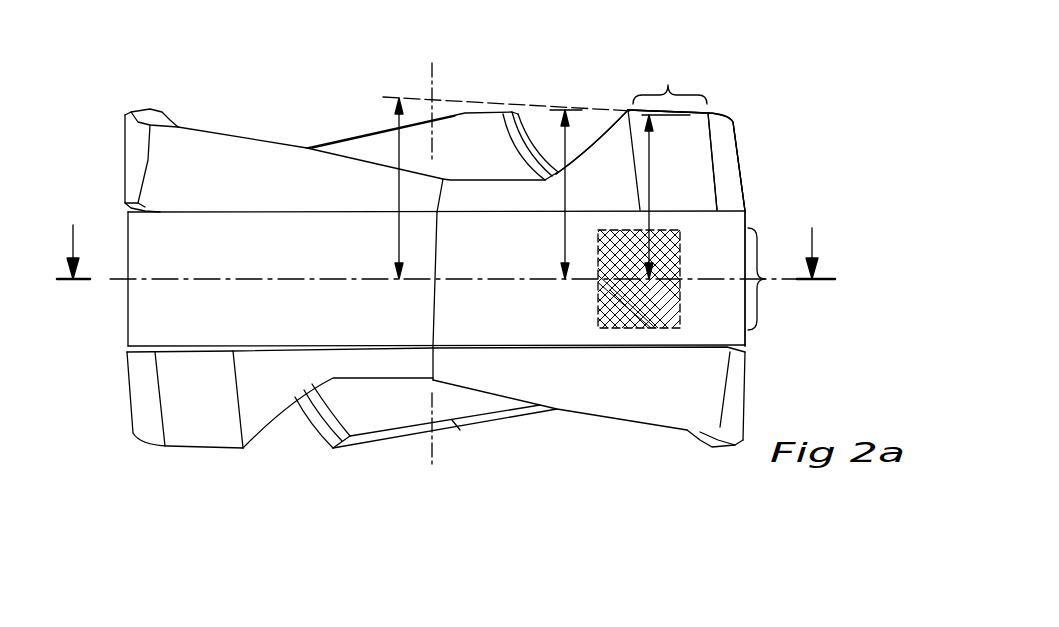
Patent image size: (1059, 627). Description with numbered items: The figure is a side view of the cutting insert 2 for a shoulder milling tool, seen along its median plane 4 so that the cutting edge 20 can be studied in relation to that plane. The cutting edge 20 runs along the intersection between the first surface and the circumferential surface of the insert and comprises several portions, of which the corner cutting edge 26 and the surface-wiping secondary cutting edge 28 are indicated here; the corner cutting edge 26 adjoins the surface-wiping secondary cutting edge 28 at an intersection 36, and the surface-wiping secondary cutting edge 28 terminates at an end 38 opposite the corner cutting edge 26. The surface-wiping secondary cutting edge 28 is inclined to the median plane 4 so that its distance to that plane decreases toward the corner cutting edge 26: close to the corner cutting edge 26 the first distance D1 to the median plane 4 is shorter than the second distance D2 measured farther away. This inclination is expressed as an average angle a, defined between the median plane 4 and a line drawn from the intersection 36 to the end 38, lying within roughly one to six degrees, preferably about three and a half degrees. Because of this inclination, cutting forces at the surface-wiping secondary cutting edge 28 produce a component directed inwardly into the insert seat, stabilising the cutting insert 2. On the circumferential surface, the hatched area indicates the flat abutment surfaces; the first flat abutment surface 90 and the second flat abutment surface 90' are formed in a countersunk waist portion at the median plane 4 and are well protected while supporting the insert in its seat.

The cutting insert 2 is at (108, 115).
The median plane 4 is at (446, 236).
The cutting edge 20 is at (765, 72).
The corner cutting edge 26 is at (745, 110).
The surface-wiping secondary cutting edge 28 is at (668, 80).
The intersection 36 is at (718, 96).
The end 38 is at (620, 96).
The second flat abutment surface 90' is at (690, 310).
The first flat abutment surface 90 is at (781, 289).
The average angle a is at (398, 188).
The first distance D1 is at (648, 191).
The second distance D2 is at (565, 196).